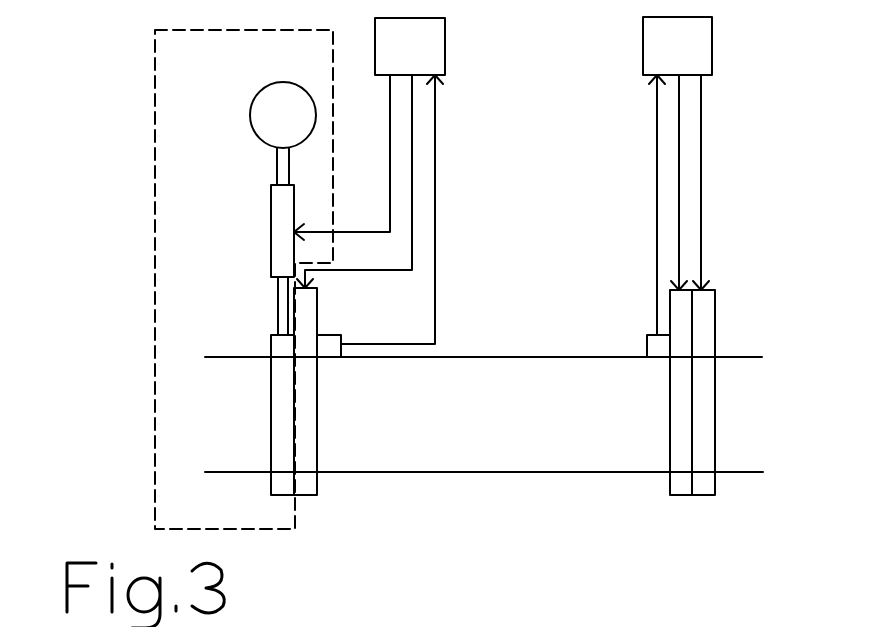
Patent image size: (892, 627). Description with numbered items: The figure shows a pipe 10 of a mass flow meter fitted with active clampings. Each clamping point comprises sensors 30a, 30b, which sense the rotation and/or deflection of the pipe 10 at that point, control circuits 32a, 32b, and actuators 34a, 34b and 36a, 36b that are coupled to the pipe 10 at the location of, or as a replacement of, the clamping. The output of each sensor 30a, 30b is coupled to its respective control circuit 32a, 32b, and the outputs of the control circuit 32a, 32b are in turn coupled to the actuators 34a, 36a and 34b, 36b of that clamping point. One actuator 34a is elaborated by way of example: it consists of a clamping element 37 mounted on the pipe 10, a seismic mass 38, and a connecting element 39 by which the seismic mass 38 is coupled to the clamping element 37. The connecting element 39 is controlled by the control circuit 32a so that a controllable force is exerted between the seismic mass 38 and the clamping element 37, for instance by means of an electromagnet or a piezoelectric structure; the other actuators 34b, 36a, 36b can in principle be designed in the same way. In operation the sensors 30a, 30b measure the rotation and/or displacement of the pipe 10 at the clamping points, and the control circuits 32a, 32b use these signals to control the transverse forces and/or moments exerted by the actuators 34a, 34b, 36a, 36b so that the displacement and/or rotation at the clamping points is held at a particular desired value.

The pipe 10 is at (476, 473).
The sensor 30a is at (324, 335).
The sensor 30b is at (647, 350).
The control circuit 32a is at (446, 50).
The control circuit 32b is at (643, 42).
The actuator 34a is at (155, 222).
The actuator 34b is at (680, 497).
The actuator 36a is at (305, 497).
The actuator 36b is at (700, 497).
The clamping element 37 is at (271, 347).
The seismic mass 38 is at (250, 117).
The connecting element 39 is at (271, 237).